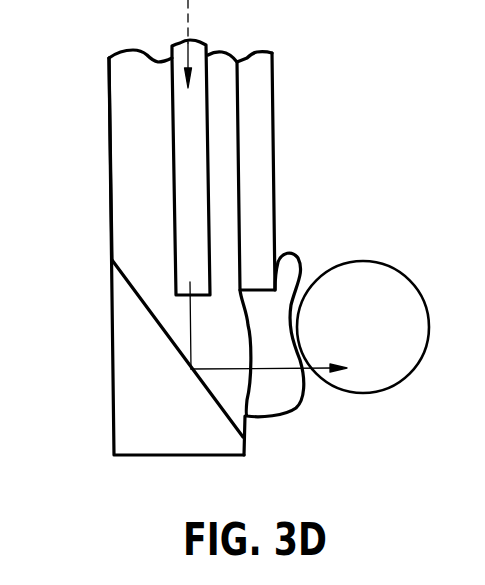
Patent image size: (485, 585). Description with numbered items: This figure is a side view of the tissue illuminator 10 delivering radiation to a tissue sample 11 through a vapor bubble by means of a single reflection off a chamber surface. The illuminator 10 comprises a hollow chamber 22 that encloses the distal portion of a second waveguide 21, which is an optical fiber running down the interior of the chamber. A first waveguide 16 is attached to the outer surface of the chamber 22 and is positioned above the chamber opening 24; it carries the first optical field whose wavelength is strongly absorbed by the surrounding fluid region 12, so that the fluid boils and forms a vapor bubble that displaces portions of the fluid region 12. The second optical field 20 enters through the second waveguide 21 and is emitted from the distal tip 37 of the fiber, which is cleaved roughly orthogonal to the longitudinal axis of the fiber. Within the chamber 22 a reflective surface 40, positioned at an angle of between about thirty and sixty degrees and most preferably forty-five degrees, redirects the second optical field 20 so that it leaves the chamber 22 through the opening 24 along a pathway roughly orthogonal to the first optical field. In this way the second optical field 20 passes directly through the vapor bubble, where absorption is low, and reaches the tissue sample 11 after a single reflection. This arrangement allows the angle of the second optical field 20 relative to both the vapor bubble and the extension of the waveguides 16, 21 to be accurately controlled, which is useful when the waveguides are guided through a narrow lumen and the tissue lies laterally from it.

The tissue illuminator 10 is at (55, 398).
The tissue sample 11 is at (372, 260).
The fluid region 12 is at (312, 403).
The first waveguide 16 is at (263, 178).
The second optical field 20 is at (200, 342).
The second waveguide 21 is at (187, 163).
The hollow chamber 22 is at (133, 103).
The chamber opening 24 is at (235, 387).
The distal tip 37 is at (190, 297).
The reflective surface 40 is at (125, 278).